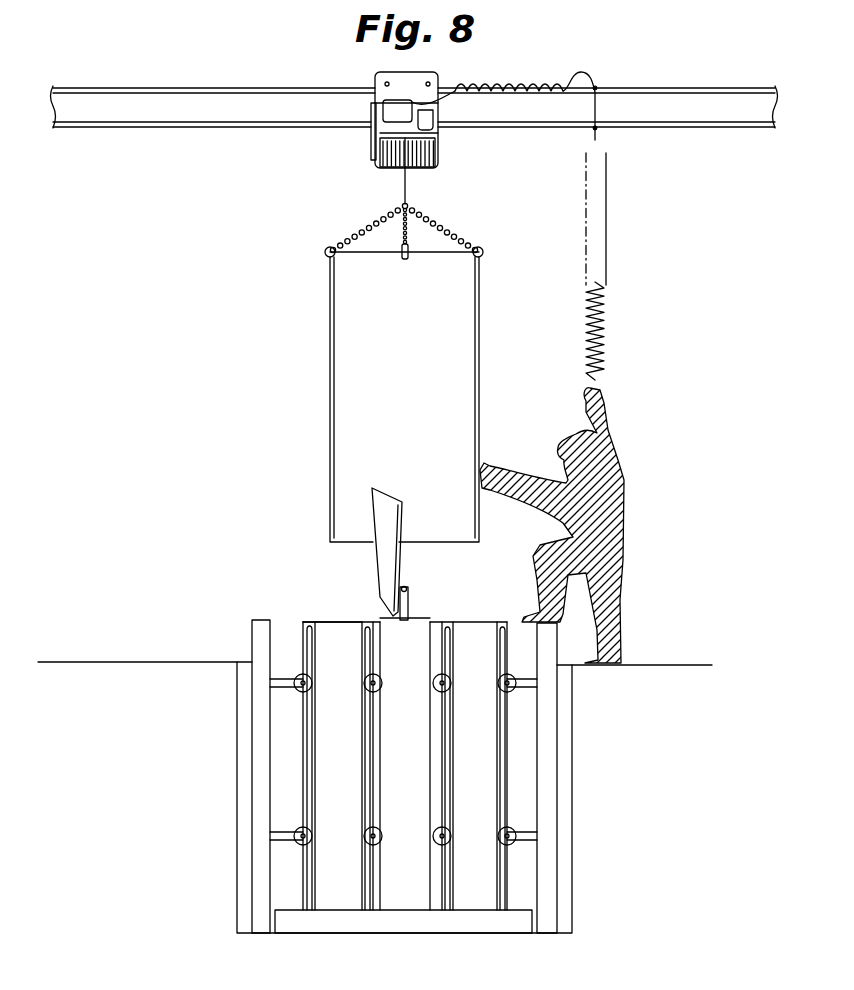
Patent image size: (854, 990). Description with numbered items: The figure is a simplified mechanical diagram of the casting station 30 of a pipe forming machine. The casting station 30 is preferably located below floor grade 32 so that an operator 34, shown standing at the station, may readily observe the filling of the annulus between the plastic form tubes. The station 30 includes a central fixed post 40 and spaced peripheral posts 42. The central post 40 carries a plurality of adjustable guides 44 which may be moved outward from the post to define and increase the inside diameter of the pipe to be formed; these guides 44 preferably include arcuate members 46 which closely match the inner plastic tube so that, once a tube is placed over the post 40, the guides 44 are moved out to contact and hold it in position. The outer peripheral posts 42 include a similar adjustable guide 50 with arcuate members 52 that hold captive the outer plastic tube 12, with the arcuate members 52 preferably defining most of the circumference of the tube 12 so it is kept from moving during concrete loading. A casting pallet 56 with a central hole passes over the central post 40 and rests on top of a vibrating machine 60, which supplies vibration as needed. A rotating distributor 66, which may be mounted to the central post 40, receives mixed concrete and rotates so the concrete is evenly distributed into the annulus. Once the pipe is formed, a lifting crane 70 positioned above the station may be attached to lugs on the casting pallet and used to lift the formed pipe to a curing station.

The lifting crane 70 is at (368, 150).
The casting station 30 is at (163, 608).
The outer plastic tube 12 is at (317, 627).
The central fixed post 40 is at (393, 642).
The adjustable guides 44 is at (463, 640).
The rotating distributor 66 is at (393, 562).
The operator 34 is at (620, 508).
The floor grade 32 is at (686, 655).
The adjustable guide 50 is at (278, 697).
The peripheral posts 42 is at (260, 748).
The arcuate members 52 is at (302, 767).
The arcuate members 46 is at (440, 790).
The casting pallet 56 is at (522, 918).
The vibrating machine 60 is at (533, 937).